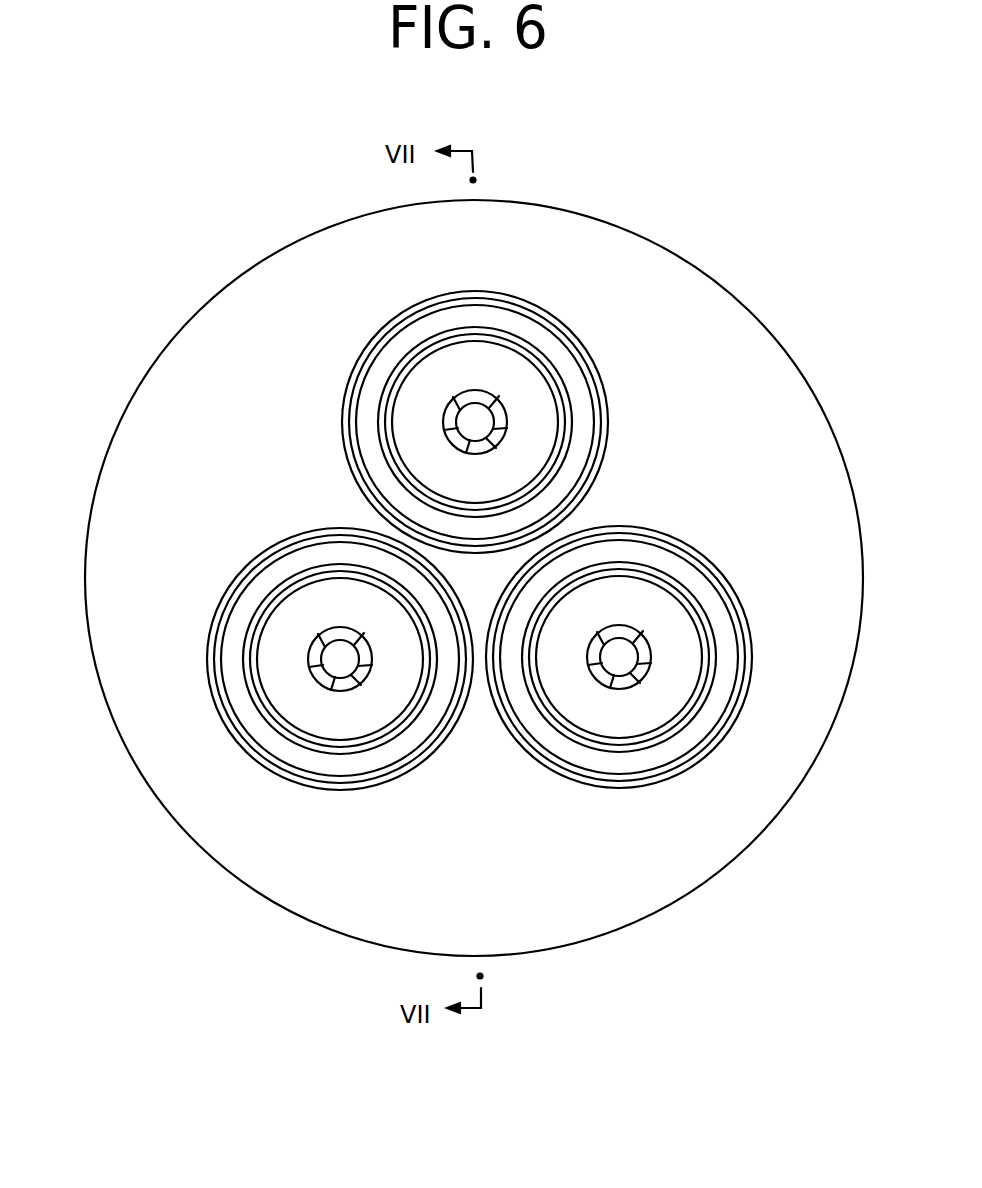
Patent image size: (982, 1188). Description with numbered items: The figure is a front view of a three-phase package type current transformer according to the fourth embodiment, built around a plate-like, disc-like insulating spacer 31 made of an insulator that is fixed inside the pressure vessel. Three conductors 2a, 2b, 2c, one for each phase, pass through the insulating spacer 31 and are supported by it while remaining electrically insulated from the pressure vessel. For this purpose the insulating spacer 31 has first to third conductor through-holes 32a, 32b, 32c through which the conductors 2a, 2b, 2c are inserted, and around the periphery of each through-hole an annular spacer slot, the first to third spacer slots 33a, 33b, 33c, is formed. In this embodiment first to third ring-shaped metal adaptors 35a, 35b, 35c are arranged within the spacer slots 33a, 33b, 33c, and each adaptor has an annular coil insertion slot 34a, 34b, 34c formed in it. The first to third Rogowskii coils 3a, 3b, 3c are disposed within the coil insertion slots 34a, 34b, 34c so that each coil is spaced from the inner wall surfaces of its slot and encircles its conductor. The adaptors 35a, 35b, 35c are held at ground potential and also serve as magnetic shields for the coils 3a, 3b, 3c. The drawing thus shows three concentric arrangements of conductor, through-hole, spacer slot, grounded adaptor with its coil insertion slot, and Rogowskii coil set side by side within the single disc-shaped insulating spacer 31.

The insulating spacer 31 is at (605, 248).
The conductor 2a is at (441, 420).
The conductor 2b is at (612, 688).
The conductor 2c is at (358, 688).
The first conductor through-hole 32a is at (452, 395).
The second conductor through-hole 32b is at (643, 633).
The third conductor through-hole 32c is at (340, 692).
The first Rogowskii coil 3a is at (583, 406).
The second Rogowskii coil 3b is at (730, 668).
The third Rogowskii coil 3c is at (237, 697).
The first spacer slot 33a is at (607, 453).
The second spacer slot 33b is at (648, 786).
The third spacer slot 33c is at (433, 760).
The first coil insertion slot 34a is at (580, 350).
The second coil insertion slot 34b is at (725, 725).
The third coil insertion slot 34c is at (272, 767).
The first metal adaptor 35a is at (503, 290).
The second metal adaptor 35b is at (750, 605).
The third metal adaptor 35c is at (212, 618).